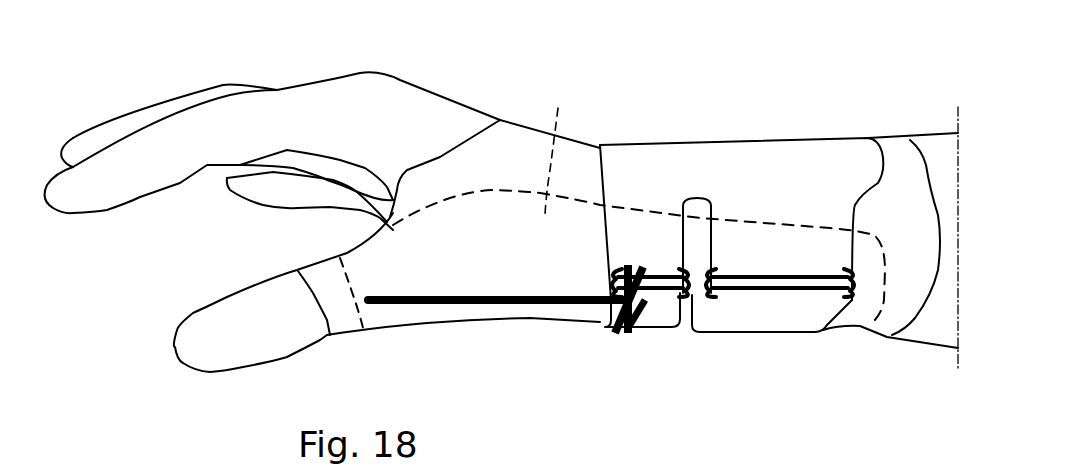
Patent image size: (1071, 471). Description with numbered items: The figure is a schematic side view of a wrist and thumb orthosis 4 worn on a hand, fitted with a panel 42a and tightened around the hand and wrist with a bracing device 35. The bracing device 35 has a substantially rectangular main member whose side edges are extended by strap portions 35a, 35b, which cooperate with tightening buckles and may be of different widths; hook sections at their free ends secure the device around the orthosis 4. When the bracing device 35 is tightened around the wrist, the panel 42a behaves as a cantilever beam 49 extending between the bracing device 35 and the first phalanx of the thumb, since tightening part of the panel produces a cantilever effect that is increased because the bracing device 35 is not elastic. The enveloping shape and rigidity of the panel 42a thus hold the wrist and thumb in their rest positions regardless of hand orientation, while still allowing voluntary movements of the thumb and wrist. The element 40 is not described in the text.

The wrist and thumb orthosis 4 is at (741, 208).
The glove / hand portion 40 is at (515, 128).
The panel 42a is at (557, 150).
The bracing device 35 is at (741, 245).
The strap portion 35a is at (662, 318).
The strap portion 35b is at (778, 320).
The cantilever beam 49 is at (518, 307).